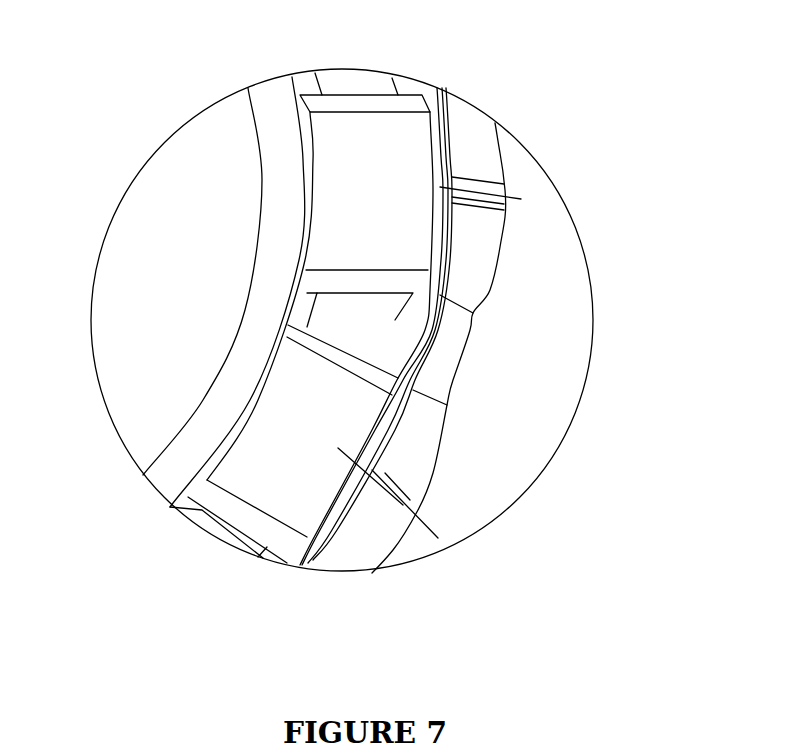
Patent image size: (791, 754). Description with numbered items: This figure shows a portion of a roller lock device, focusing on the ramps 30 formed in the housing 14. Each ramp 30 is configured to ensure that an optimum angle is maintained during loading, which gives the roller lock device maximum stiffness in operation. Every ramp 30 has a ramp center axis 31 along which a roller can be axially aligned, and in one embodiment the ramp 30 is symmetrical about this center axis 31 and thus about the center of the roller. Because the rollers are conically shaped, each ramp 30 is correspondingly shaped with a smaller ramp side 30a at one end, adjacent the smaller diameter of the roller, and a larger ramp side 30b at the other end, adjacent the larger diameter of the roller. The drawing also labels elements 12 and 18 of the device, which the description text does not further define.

The inner tube 12 is at (172, 342).
The housing 14 is at (548, 367).
The frame 18 is at (358, 85).
The ramp 30 is at (418, 463).
The smaller ramp side 30a is at (342, 525).
The larger ramp side 30b is at (393, 550).
The ramp center axis 31 is at (417, 522).